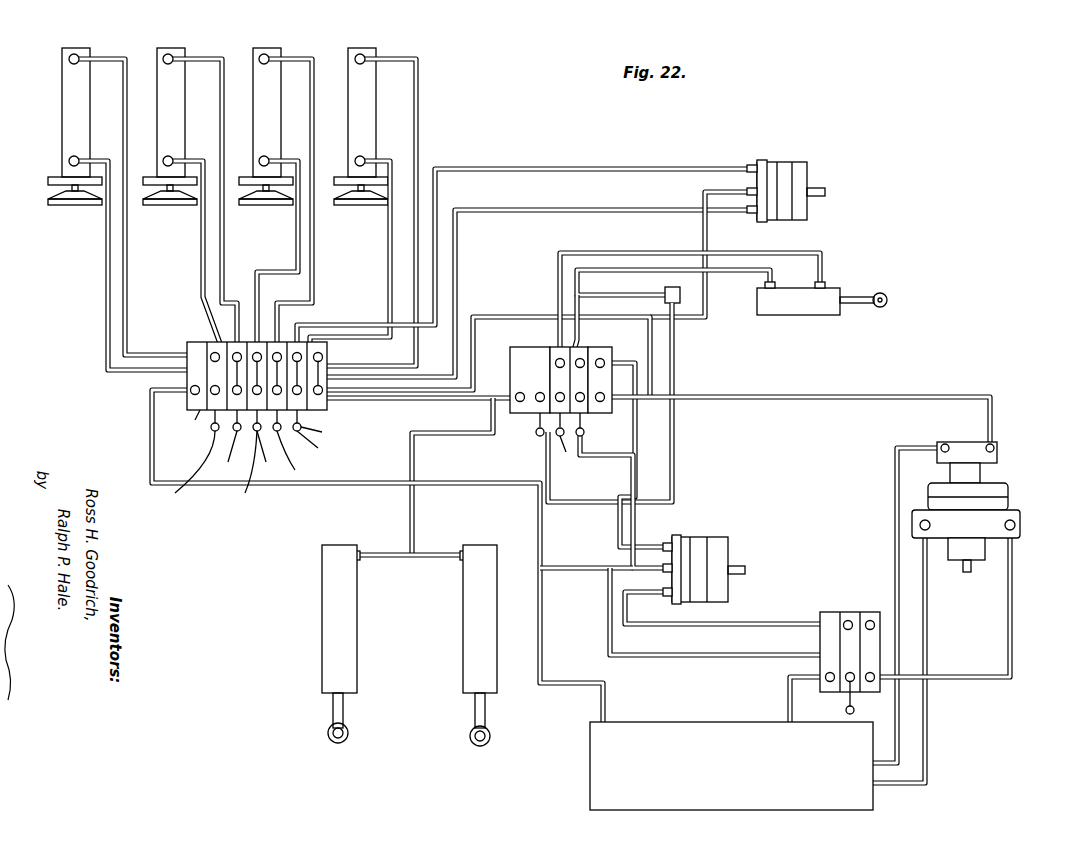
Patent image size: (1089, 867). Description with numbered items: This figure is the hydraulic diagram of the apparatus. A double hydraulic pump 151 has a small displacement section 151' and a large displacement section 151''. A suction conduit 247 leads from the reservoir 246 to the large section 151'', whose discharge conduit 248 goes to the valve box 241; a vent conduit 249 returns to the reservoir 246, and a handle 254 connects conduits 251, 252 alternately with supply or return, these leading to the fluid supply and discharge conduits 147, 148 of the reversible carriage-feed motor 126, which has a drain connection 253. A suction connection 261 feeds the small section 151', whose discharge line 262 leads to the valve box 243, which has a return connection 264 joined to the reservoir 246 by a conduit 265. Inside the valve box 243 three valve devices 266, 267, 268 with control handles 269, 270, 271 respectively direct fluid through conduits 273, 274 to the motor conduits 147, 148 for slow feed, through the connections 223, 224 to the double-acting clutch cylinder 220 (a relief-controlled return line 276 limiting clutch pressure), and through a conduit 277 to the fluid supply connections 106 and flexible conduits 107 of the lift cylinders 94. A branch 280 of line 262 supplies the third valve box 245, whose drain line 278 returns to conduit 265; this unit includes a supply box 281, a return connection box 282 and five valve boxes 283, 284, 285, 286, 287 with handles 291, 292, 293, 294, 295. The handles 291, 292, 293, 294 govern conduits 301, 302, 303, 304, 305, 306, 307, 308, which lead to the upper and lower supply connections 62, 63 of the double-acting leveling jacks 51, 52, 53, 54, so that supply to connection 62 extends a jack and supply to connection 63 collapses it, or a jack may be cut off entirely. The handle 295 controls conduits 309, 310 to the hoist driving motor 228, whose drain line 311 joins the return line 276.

The leveling jack 51 is at (62, 131).
The leveling jack 52 is at (185, 120).
The leveling jack 53 is at (281, 125).
The leveling jack 54 is at (376, 118).
The supply connection 62 is at (75, 54).
The supply connection 63 is at (69, 162).
The lift cylinder 94 is at (463, 620).
The fluid supply connection 106 is at (360, 554).
The flexible conduit 107 is at (438, 553).
The motor 126 is at (728, 556).
The fluid supply and discharge conduit 147 is at (658, 592).
The fluid supply and discharge conduit 148 is at (655, 545).
The hydraulic pump 151 is at (998, 486).
The small displacement section 151' is at (995, 450).
The large displacement section 151'' is at (996, 541).
The cylinder 220 is at (825, 310).
The fluid supply and exhaust connection 223 is at (563, 283).
The fluid supply and exhaust connection 224 is at (770, 278).
The hydraulic driving motor 228 is at (800, 212).
The valve box 241 is at (845, 612).
The valve box 243 is at (640, 358).
The valve box 245 is at (195, 420).
The reservoir 246 is at (590, 795).
The suction conduit 247 is at (925, 733).
The discharge conduit 248 is at (1010, 612).
The vent conduit 249 is at (790, 705).
The conduit 251 is at (778, 622).
The conduit 252 is at (745, 655).
The drain connection 253 is at (592, 572).
The handle 254 is at (846, 708).
The suction connection 261 is at (897, 498).
The discharge line 262 is at (938, 397).
The return connection 264 is at (495, 481).
The conduit 265 is at (538, 524).
The valve device 266 is at (595, 348).
The valve device 267 is at (558, 350).
The valve device 268 is at (535, 352).
The control handle 269 is at (582, 440).
The control handle 270 is at (574, 441).
The control handle 271 is at (526, 437).
The conduit 273 is at (636, 468).
The conduit 274 is at (640, 497).
The return line 276 is at (672, 440).
The conduit 277 is at (436, 433).
The drain line 278 is at (360, 486).
The branch 280 is at (495, 317).
The supply box 281 is at (327, 404).
The return connection box 282 is at (187, 400).
The valve box 283 is at (228, 437).
The valve box 284 is at (268, 451).
The valve box 285 is at (258, 320).
The valve box 286 is at (300, 325).
The valve box 287 is at (318, 337).
The control handle 291 is at (187, 458).
The control handle 292 is at (246, 458).
The control handle 293 is at (296, 444).
The control handle 294 is at (321, 434).
The control handle 295 is at (328, 432).
The conduit 301 is at (108, 306).
The conduit 302 is at (125, 300).
The conduit 303 is at (203, 247).
The conduit 304 is at (222, 256).
The conduit 305 is at (298, 235).
The conduit 306 is at (312, 248).
The conduit 307 is at (390, 245).
The conduit 308 is at (416, 160).
The conduit 309 is at (545, 169).
The conduit 310 is at (555, 210).
The drain line 311 is at (705, 248).